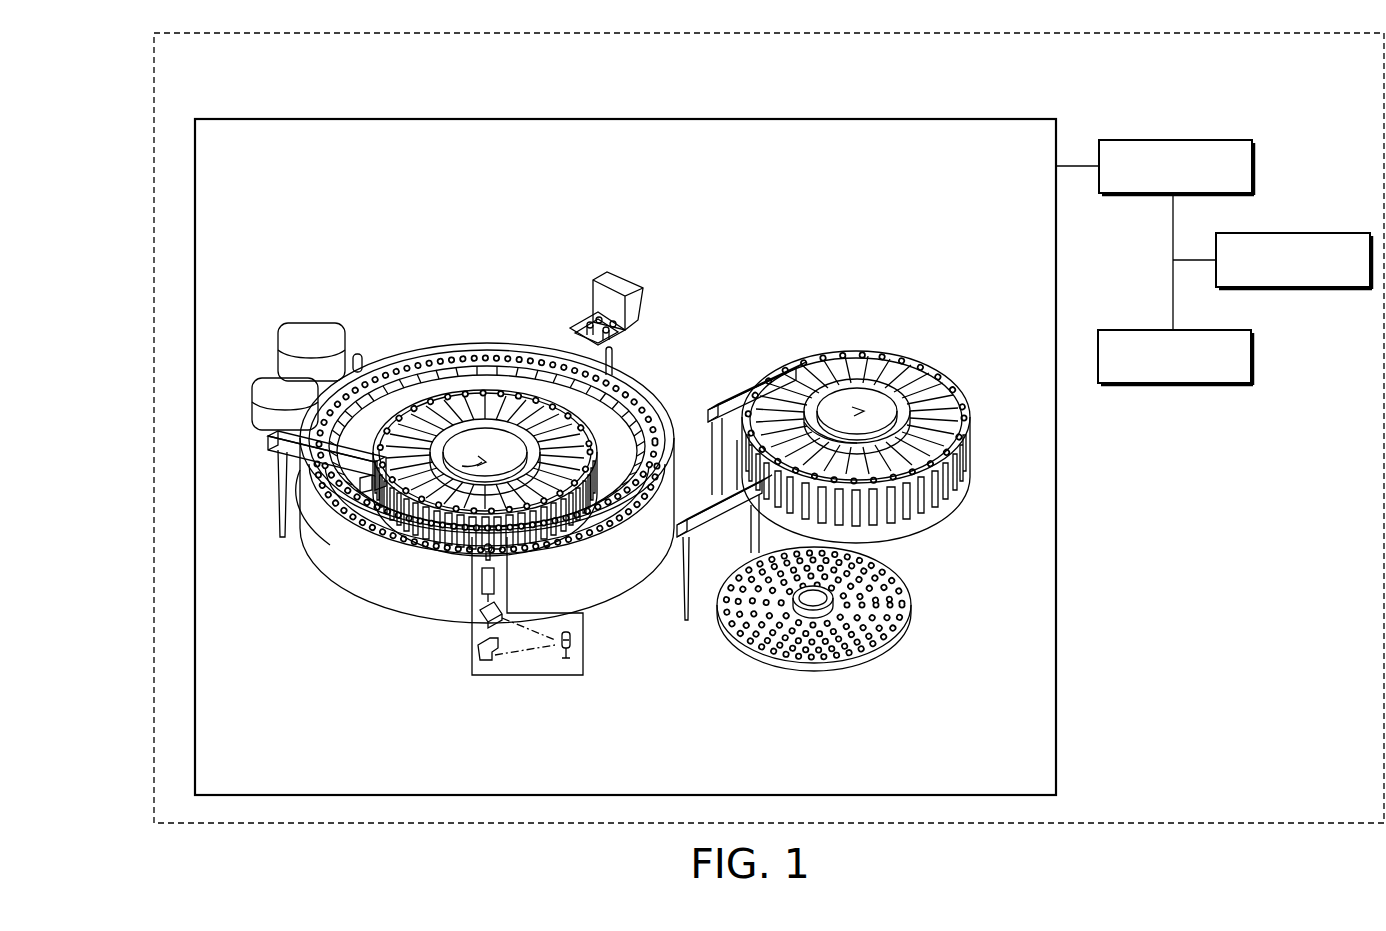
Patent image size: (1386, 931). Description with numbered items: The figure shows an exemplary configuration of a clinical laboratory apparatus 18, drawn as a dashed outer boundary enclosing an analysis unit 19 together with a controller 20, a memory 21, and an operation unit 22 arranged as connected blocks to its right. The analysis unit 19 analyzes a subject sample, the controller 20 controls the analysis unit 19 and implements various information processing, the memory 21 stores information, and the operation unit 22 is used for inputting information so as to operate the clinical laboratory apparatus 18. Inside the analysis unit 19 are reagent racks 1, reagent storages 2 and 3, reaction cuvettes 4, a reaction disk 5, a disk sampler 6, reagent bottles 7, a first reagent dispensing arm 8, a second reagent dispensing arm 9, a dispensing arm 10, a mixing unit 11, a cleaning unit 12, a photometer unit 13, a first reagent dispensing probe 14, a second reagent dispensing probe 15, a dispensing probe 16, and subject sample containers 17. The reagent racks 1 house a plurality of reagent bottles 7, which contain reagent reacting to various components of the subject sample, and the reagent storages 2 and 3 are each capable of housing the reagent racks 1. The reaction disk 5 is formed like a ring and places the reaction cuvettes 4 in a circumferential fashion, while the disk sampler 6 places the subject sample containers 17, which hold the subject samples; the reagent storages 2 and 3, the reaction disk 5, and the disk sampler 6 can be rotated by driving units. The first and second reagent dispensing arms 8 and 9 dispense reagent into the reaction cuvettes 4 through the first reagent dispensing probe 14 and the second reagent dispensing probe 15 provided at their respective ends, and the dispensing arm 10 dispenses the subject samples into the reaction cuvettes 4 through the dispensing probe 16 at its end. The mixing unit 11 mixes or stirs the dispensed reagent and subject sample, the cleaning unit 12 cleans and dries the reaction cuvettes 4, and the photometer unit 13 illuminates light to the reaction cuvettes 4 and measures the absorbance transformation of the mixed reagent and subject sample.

The reagent rack 1 is at (548, 380).
The reagent storage 2 is at (520, 373).
The reagent storage 3 is at (930, 330).
The reaction cuvette 4 is at (602, 565).
The reaction disk 5 is at (640, 388).
The disk sampler 6 is at (843, 632).
The reagent bottle 7 is at (435, 555).
The first reagent dispensing arm 8 is at (270, 440).
The second reagent dispensing arm 9 is at (735, 404).
The dispensing arm 10 is at (700, 510).
The mixing unit 11 is at (270, 348).
The cleaning unit 12 is at (620, 283).
The photometer unit 13 is at (562, 665).
The first reagent dispensing probe 14 is at (318, 558).
The second reagent dispensing probe 15 is at (810, 380).
The dispensing probe 16 is at (757, 545).
The subject sample container 17 is at (872, 650).
The clinical laboratory apparatus 18 is at (153, 230).
The analysis unit 19 is at (765, 118).
The controller 20 is at (1219, 140).
The memory 21 is at (1311, 233).
The operation unit 22 is at (1213, 383).